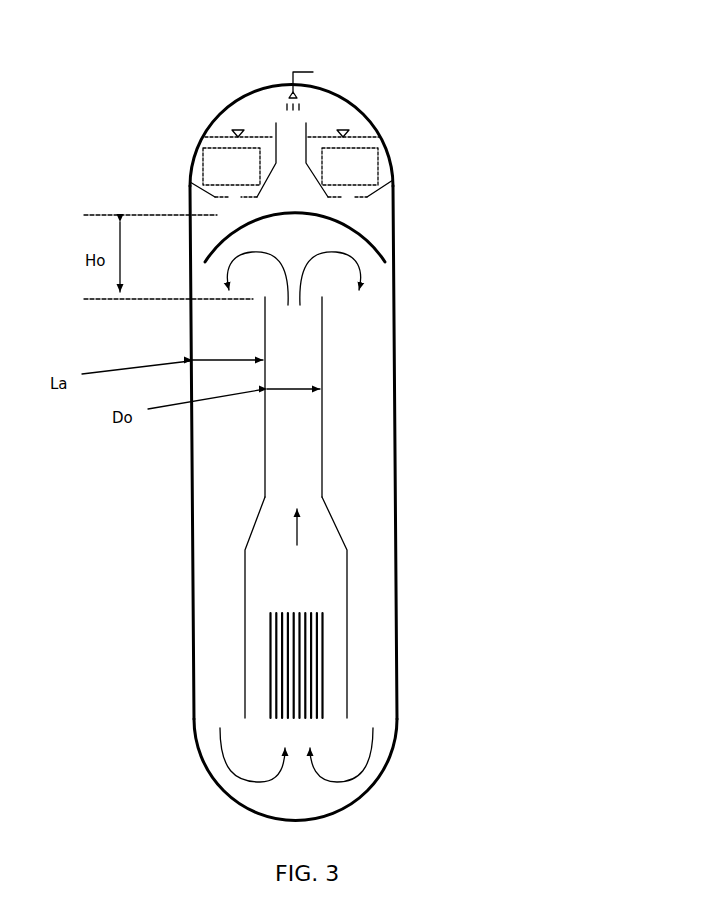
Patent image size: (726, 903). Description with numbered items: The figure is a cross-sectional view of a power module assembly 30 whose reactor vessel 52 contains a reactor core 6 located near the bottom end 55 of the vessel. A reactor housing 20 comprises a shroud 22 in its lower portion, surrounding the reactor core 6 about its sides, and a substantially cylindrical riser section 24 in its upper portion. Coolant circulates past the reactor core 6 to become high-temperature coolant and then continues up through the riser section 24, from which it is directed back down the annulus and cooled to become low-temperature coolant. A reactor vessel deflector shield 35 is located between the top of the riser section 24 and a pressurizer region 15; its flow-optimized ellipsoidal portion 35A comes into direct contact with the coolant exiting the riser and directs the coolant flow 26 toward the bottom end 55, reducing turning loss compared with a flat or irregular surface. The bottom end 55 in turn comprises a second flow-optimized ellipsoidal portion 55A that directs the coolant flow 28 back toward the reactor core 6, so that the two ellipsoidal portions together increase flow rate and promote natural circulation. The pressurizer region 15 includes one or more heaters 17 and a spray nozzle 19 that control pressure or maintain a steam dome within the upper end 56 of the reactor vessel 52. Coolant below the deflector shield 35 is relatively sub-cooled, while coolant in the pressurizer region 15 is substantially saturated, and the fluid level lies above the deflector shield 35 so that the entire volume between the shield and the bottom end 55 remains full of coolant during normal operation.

The reactor core 6 is at (332, 628).
The pressurizer region 15 is at (233, 86).
The heaters 17 is at (213, 147).
The spray nozzle 19 is at (298, 58).
The reactor housing 20 is at (380, 507).
The shroud 22 is at (233, 645).
The riser section 24 is at (329, 360).
The coolant flow 26 is at (372, 279).
The coolant flow 28 is at (222, 763).
The power module assembly 30 is at (326, 445).
The reactor vessel deflector shield 35 is at (370, 220).
The flow-optimized ellipsoidal portion 35A is at (263, 223).
The reactor vessel 52 is at (407, 743).
The bottom end 55 is at (230, 805).
The second flow-optimized ellipsoidal portion 55A is at (337, 808).
The upper end 56 is at (344, 126).